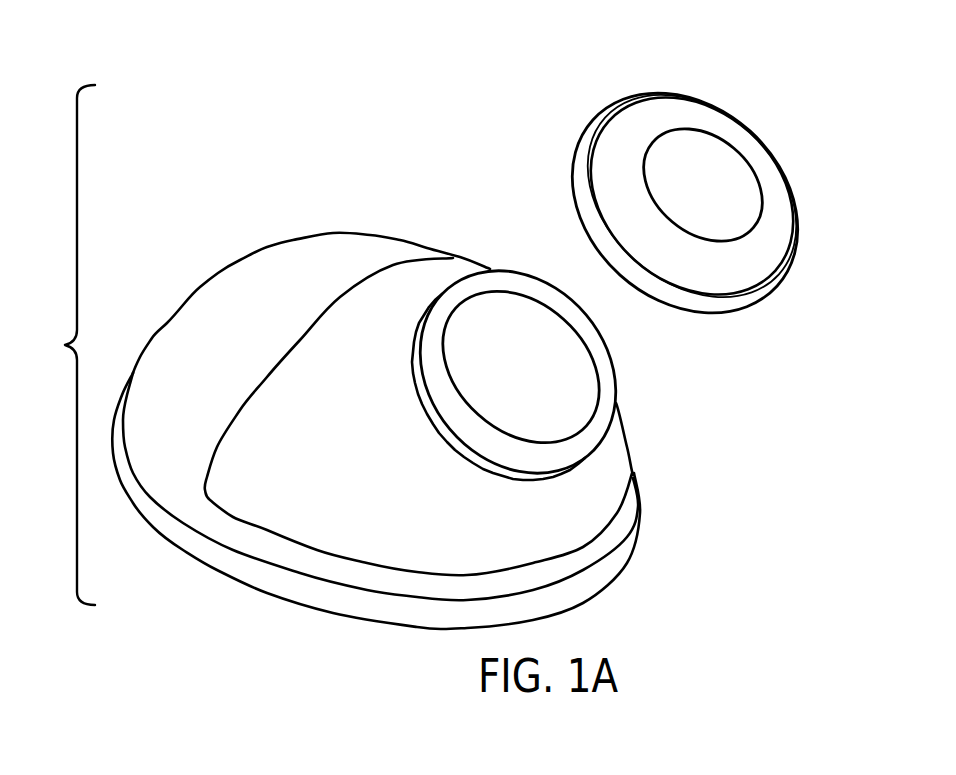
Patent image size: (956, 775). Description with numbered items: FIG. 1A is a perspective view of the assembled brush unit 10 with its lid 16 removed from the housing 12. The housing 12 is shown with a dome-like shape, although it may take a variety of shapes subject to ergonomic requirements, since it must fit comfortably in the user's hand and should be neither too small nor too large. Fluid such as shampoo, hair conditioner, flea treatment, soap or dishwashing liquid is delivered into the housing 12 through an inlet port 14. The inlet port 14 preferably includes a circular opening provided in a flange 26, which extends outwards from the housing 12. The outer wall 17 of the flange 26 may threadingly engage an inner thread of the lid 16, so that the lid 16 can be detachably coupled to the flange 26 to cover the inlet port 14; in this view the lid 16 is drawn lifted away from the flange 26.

The brush unit 10 is at (538, 108).
The housing 12 is at (292, 250).
The inlet port 14 is at (567, 358).
The lid 16 is at (750, 153).
The outer wall 17 is at (612, 385).
The flange 26 is at (455, 268).